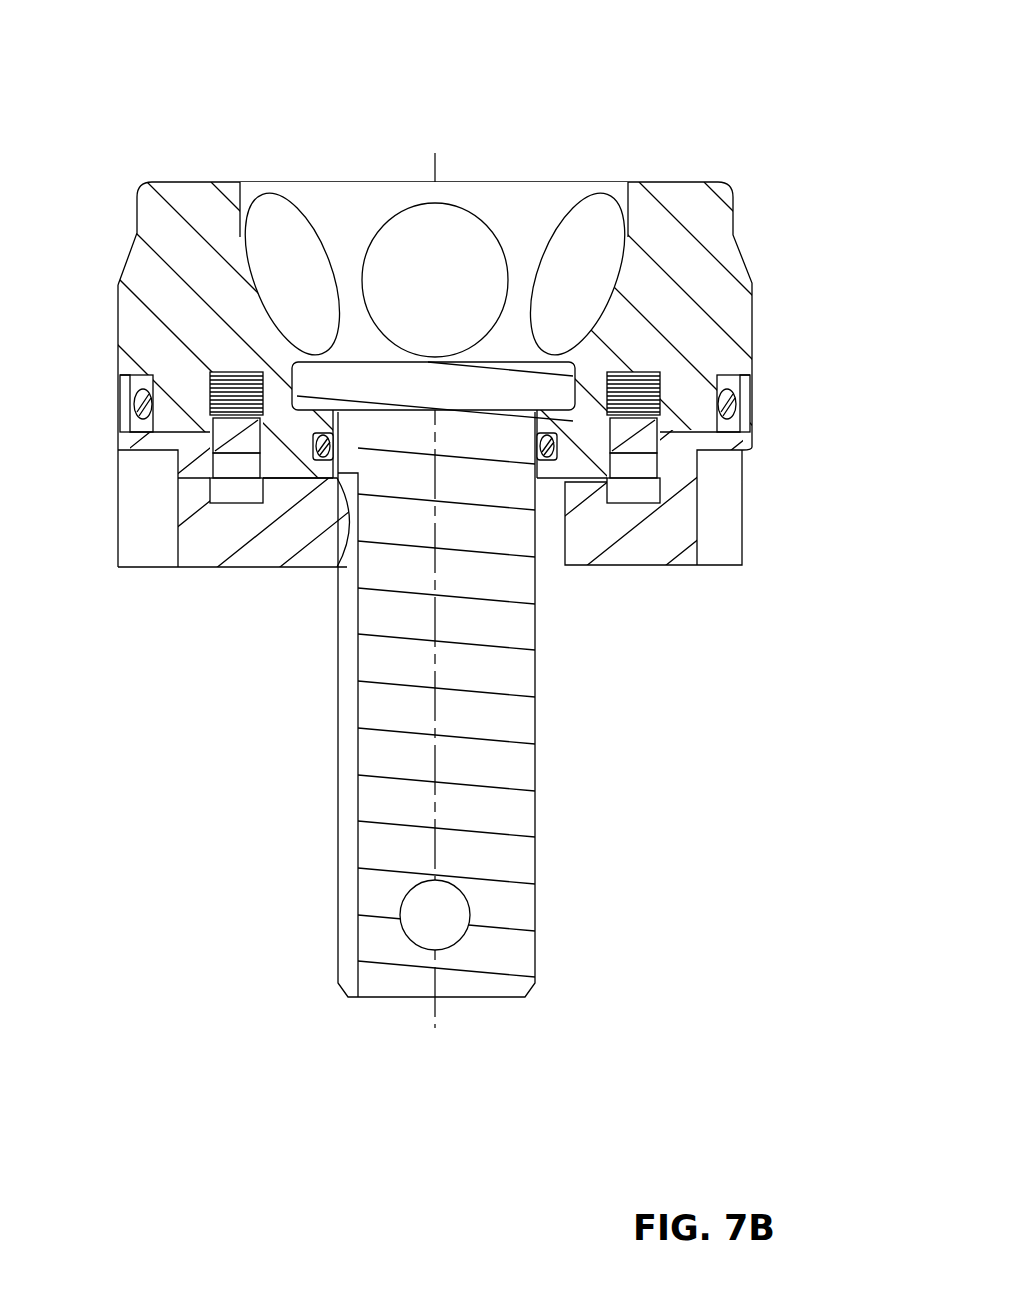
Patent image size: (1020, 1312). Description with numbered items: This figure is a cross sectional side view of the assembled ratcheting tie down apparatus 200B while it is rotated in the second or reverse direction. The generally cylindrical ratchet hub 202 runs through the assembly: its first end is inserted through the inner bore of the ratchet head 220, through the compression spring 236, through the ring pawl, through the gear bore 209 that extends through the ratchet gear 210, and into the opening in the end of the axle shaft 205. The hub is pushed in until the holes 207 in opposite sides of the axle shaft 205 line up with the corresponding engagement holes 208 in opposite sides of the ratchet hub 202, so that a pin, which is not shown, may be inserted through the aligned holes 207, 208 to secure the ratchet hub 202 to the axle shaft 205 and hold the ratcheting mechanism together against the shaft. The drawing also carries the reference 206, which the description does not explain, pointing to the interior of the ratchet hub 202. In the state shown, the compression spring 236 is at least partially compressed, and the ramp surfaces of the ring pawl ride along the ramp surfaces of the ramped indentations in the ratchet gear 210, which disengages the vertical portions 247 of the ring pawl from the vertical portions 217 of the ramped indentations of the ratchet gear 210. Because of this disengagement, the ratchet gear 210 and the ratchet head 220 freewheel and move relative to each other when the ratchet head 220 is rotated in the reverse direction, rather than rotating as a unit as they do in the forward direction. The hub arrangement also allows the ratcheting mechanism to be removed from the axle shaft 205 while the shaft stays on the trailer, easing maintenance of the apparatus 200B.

The ratcheting tie down apparatus 200B is at (112, 97).
The ratchet hub 202 is at (503, 758).
The axle shaft 205 is at (355, 838).
The threads 206 is at (435, 762).
The holes 207 is at (435, 915).
The engagement holes 208 is at (435, 915).
The gear bore 209 is at (389, 383).
The ratchet gear 210 is at (633, 543).
The vertical portions of the ramped indentations 217 is at (240, 467).
The ratchet head 220 is at (518, 213).
The compression spring 236 is at (243, 397).
The vertical portions of the ring pawl 247 is at (240, 437).